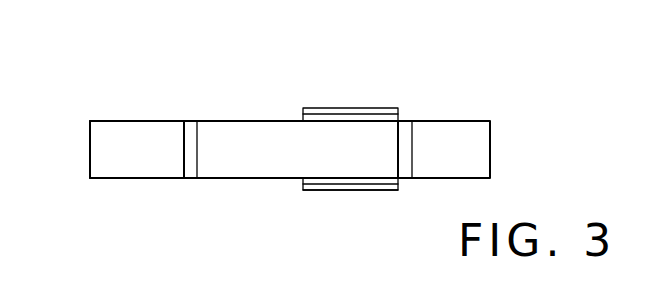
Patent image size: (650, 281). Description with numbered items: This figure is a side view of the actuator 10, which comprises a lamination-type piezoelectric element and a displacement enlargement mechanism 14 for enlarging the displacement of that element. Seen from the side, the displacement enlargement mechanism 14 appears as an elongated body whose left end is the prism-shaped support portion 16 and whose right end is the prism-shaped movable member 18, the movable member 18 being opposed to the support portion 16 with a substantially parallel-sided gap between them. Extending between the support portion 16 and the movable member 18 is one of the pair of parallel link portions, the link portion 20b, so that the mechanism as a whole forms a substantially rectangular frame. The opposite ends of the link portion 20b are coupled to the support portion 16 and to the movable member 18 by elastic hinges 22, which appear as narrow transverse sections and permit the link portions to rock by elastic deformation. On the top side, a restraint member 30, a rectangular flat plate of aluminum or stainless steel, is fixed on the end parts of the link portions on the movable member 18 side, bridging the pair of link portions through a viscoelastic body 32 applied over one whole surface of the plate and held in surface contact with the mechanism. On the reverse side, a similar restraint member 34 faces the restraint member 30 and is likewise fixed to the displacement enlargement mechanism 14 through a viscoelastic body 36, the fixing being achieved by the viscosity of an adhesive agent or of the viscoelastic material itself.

The actuator 10 is at (136, 117).
The displacement enlargement mechanism 14 is at (114, 183).
The support portion 16 is at (103, 152).
The movable member 18 is at (482, 147).
The link portion 20b is at (241, 170).
The elastic hinge 22 is at (192, 173).
The restraint member 30 is at (376, 107).
The viscoelastic body 32 is at (336, 125).
The restraint member 34 is at (313, 192).
The viscoelastic body 36 is at (350, 172).